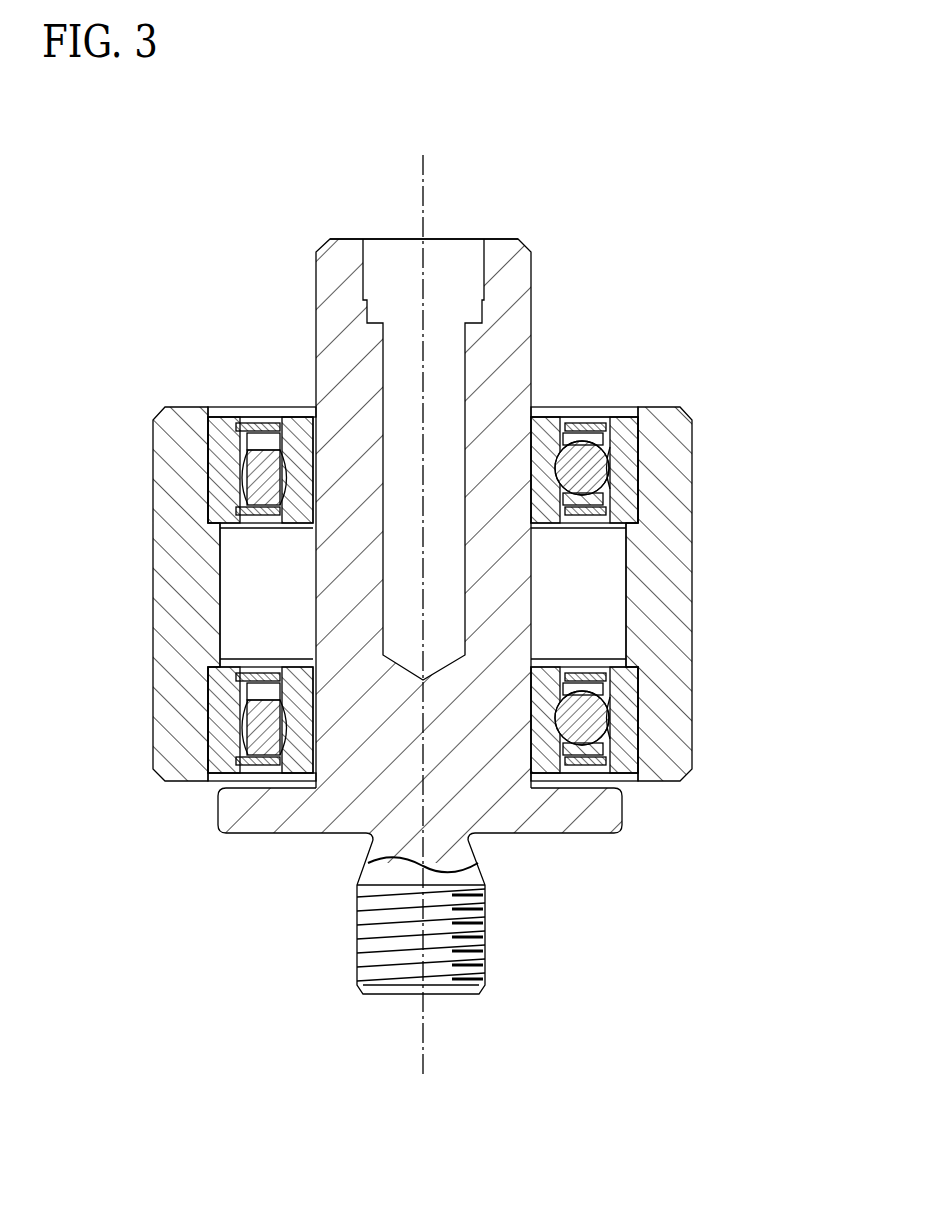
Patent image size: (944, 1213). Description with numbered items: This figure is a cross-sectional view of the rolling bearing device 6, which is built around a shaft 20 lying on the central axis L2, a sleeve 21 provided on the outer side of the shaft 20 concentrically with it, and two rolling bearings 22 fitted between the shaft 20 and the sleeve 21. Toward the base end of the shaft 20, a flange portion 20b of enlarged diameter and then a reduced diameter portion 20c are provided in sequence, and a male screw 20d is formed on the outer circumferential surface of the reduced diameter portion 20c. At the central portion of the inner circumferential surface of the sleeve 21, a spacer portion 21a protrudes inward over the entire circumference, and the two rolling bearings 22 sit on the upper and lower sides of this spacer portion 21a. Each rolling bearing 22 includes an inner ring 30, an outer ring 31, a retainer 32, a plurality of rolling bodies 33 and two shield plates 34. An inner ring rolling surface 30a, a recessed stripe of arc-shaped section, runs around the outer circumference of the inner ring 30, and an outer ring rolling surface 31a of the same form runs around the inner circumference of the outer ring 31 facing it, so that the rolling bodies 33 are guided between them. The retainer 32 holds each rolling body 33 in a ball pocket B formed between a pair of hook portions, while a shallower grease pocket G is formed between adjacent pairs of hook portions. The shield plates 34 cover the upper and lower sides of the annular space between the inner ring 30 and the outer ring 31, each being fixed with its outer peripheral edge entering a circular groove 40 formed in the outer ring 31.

The rolling bearing device 6 is at (660, 153).
The shaft 20 is at (502, 245).
The flange portion 20b is at (620, 812).
The reduced diameter portion 20c is at (385, 995).
The male screw 20d is at (452, 975).
The sleeve 21 is at (665, 410).
The spacer portion 21a is at (628, 595).
The rolling bearing 22 is at (642, 438).
The inner ring 30 is at (545, 420).
The inner ring rolling surface 30a is at (275, 515).
The outer ring 31 is at (628, 468).
The outer ring rolling surface 31a is at (252, 475).
The retainer 32 is at (248, 498).
The rolling body 33 is at (283, 470).
The shield plate 34 is at (258, 419).
The circular groove 40 is at (233, 419).
The ball pocket B is at (583, 440).
The grease pocket G is at (250, 442).
The axis L2 is at (425, 170).